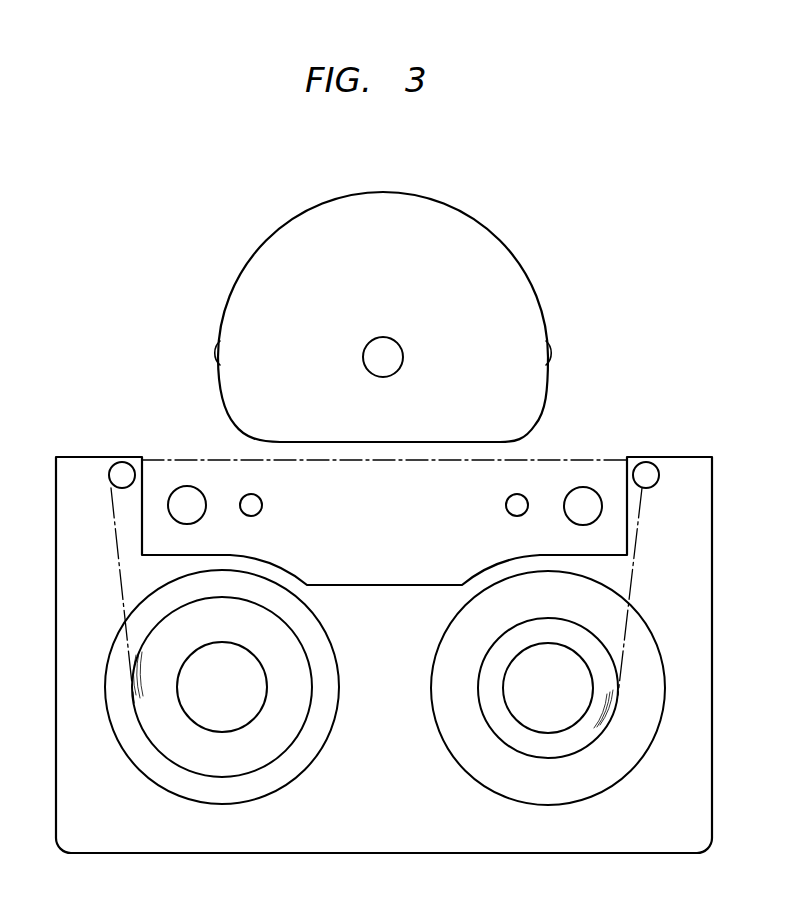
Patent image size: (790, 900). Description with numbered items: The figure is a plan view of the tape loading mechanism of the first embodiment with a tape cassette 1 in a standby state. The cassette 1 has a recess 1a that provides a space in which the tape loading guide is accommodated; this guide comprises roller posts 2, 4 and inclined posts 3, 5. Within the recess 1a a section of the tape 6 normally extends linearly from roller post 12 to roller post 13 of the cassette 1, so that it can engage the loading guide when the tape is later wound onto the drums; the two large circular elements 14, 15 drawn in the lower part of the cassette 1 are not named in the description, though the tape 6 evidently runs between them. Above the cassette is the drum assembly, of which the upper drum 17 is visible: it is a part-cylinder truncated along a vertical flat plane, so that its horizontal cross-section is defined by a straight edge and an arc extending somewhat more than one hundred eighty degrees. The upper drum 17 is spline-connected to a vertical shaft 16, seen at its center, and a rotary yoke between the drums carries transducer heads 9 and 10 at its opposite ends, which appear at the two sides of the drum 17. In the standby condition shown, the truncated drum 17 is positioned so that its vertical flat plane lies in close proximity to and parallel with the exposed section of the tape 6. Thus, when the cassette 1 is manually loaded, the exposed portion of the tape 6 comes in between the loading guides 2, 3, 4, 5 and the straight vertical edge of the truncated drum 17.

The cassette 1 is at (65, 534).
The recess 1a is at (405, 585).
The roller post 2 is at (584, 495).
The inclined post 3 is at (506, 504).
The roller post 4 is at (188, 493).
The inclined post 5 is at (262, 505).
The tape 6 is at (369, 462).
The transducer head 9 is at (217, 355).
The transducer head 10 is at (551, 355).
The roller post 12 is at (646, 470).
The roller post 13 is at (118, 470).
The tape reel 14 is at (112, 697).
The tape reel 15 is at (650, 703).
The vertical shaft 16 is at (385, 348).
The upper drum 17 is at (283, 240).